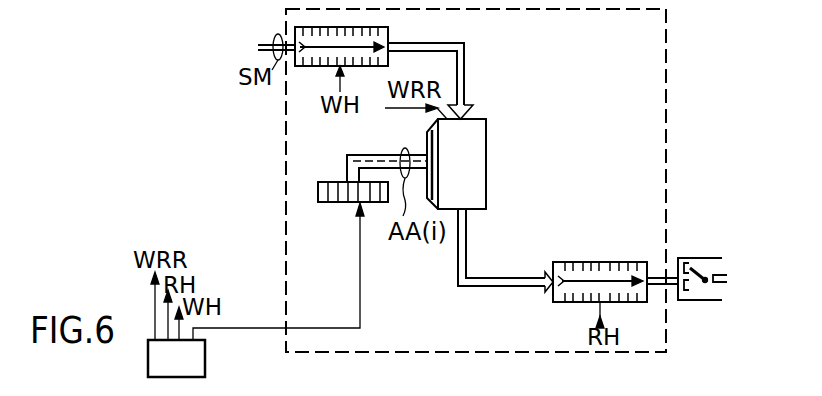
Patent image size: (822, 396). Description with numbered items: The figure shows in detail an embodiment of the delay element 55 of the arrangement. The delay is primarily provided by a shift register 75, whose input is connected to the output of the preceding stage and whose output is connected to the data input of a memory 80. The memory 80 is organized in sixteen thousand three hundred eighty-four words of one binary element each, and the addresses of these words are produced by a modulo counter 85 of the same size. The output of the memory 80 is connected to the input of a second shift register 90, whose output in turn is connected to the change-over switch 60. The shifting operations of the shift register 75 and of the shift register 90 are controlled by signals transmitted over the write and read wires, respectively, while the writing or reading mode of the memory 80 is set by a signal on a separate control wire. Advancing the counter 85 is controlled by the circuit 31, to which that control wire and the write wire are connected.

The circuit 31 is at (190, 360).
The delay element 55 is at (648, 59).
The change-over switch 60 is at (702, 263).
The shift register 75 is at (388, 38).
The memory 80 is at (475, 170).
The modulo-16384 counter 85 is at (323, 200).
The shift register 90 is at (597, 267).